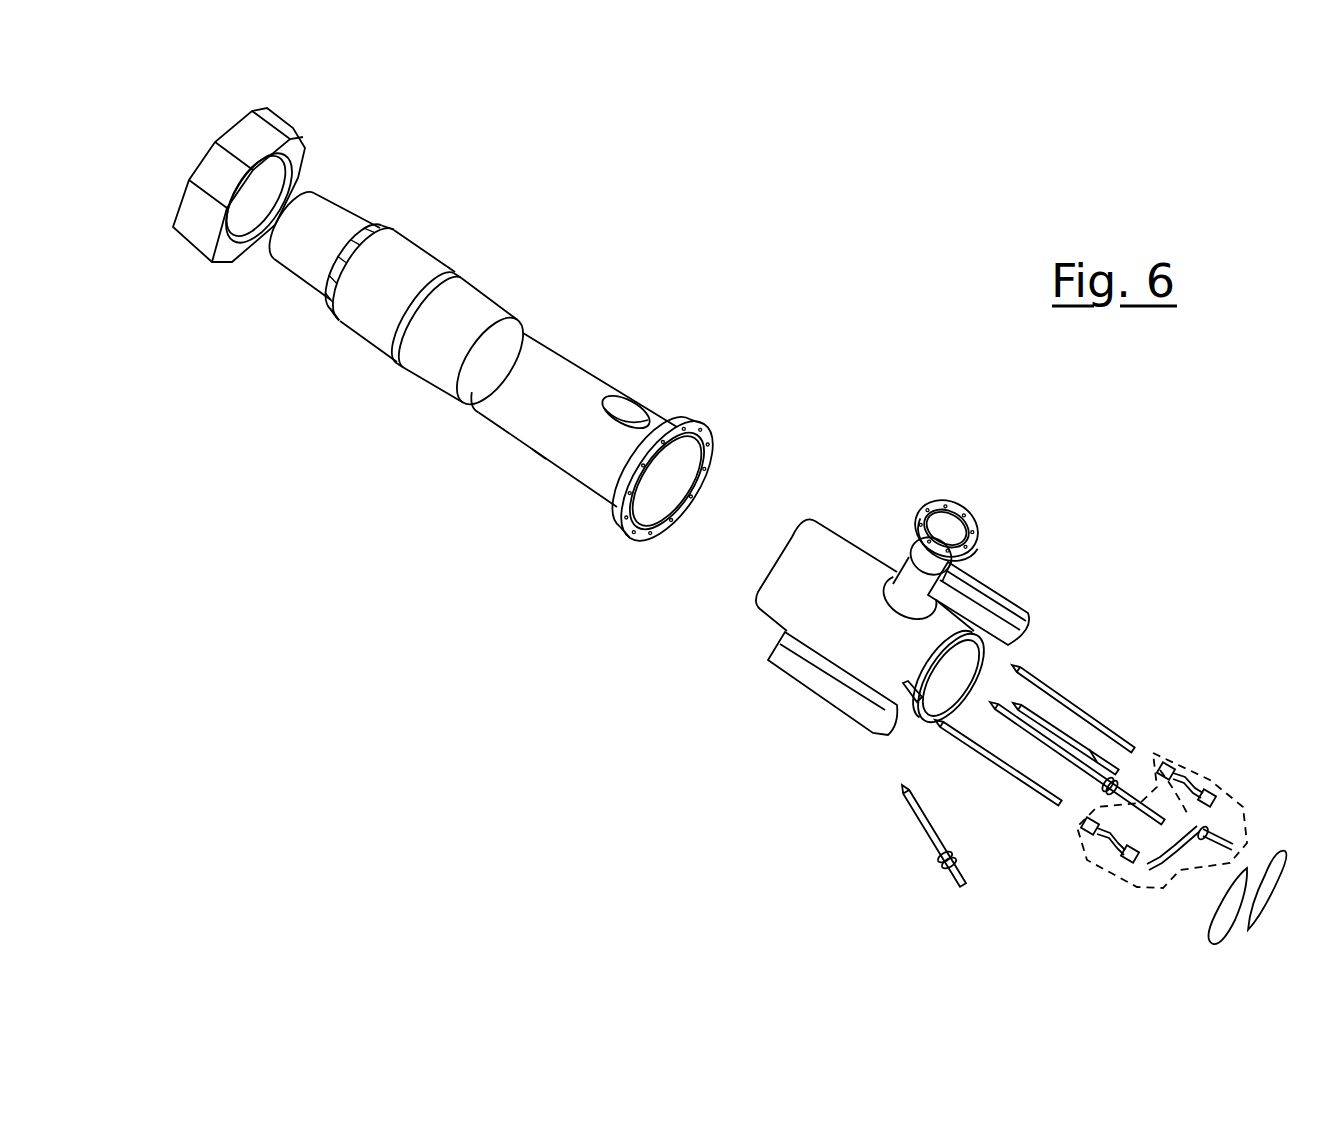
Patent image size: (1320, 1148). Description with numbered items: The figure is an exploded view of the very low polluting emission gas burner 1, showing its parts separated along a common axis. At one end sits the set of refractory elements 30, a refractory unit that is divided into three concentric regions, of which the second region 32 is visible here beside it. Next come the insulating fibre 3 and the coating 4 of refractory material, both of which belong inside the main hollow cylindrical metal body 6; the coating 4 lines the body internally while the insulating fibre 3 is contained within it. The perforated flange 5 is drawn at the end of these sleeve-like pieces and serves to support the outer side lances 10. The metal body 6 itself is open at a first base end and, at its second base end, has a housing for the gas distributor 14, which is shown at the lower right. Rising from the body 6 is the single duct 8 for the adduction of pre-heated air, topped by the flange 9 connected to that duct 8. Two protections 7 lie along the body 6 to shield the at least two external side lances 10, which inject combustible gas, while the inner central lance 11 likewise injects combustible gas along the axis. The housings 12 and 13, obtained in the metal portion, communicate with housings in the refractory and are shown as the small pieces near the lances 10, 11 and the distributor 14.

The gas burner 1 is at (572, 722).
The insulating fibre 3 is at (469, 315).
The coating of refractory material 4 is at (547, 365).
The perforated flange 5 is at (708, 433).
The main hollow cylindrical metal body 6 is at (835, 557).
The protections 7 is at (978, 607).
The duct for the adduction of pre-heated air 8 is at (903, 572).
The flange 9 is at (968, 510).
The outer side lances 10 is at (1055, 693).
The inner central lance 11 is at (1075, 762).
The housing in the metal portion 12 is at (1113, 767).
The housing in the metal portion 13 is at (947, 869).
The gas distributor 14 is at (1228, 792).
The set of refractory elements 30 is at (194, 251).
The second region 32 is at (340, 223).